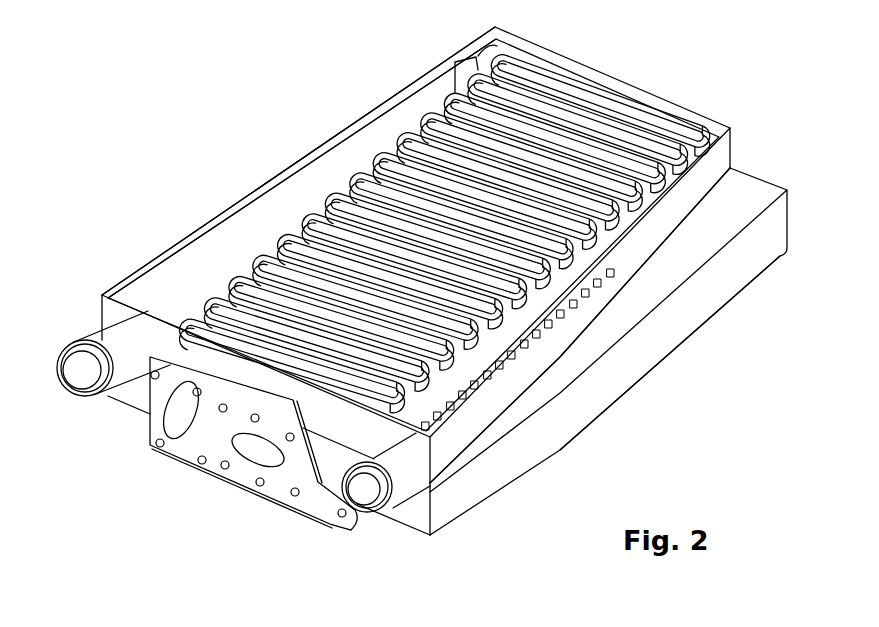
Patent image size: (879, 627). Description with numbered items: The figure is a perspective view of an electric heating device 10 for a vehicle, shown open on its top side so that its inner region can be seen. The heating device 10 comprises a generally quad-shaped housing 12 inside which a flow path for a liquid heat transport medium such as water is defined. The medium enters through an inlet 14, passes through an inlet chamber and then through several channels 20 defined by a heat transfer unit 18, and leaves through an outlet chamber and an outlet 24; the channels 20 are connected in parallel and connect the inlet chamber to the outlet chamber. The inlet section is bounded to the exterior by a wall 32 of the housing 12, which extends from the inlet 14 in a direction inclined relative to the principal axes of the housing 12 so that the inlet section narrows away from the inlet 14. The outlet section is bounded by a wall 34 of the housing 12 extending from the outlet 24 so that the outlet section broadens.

The electric heating device 10 is at (192, 99).
The housing 12 is at (720, 157).
The inlet 14 is at (368, 495).
The heat transfer unit 18 is at (214, 300).
The channels 20 is at (195, 328).
The outlet 24 is at (80, 374).
The wall 32 is at (663, 225).
The wall 34 is at (302, 150).